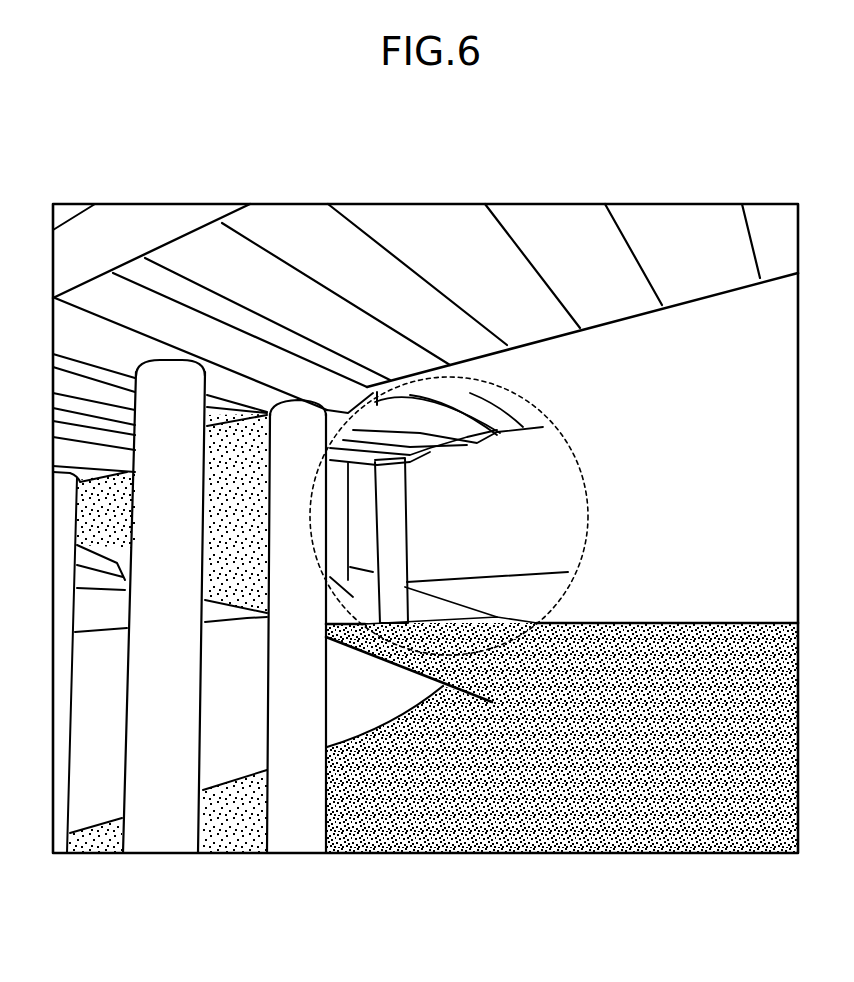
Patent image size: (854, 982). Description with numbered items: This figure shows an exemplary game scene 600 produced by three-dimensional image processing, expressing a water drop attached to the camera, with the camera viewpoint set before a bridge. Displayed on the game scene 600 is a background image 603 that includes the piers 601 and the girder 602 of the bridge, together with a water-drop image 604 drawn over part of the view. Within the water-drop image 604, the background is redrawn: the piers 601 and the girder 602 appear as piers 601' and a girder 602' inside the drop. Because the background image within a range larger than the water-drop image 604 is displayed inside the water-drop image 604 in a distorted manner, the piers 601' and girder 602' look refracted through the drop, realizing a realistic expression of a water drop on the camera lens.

The game scene 600 is at (482, 855).
The piers 601 is at (296, 660).
The piers 601' is at (375, 689).
The girder 602 is at (407, 279).
The girder 602' is at (436, 307).
The background image 603 is at (702, 345).
The water-drop image 604 is at (498, 603).